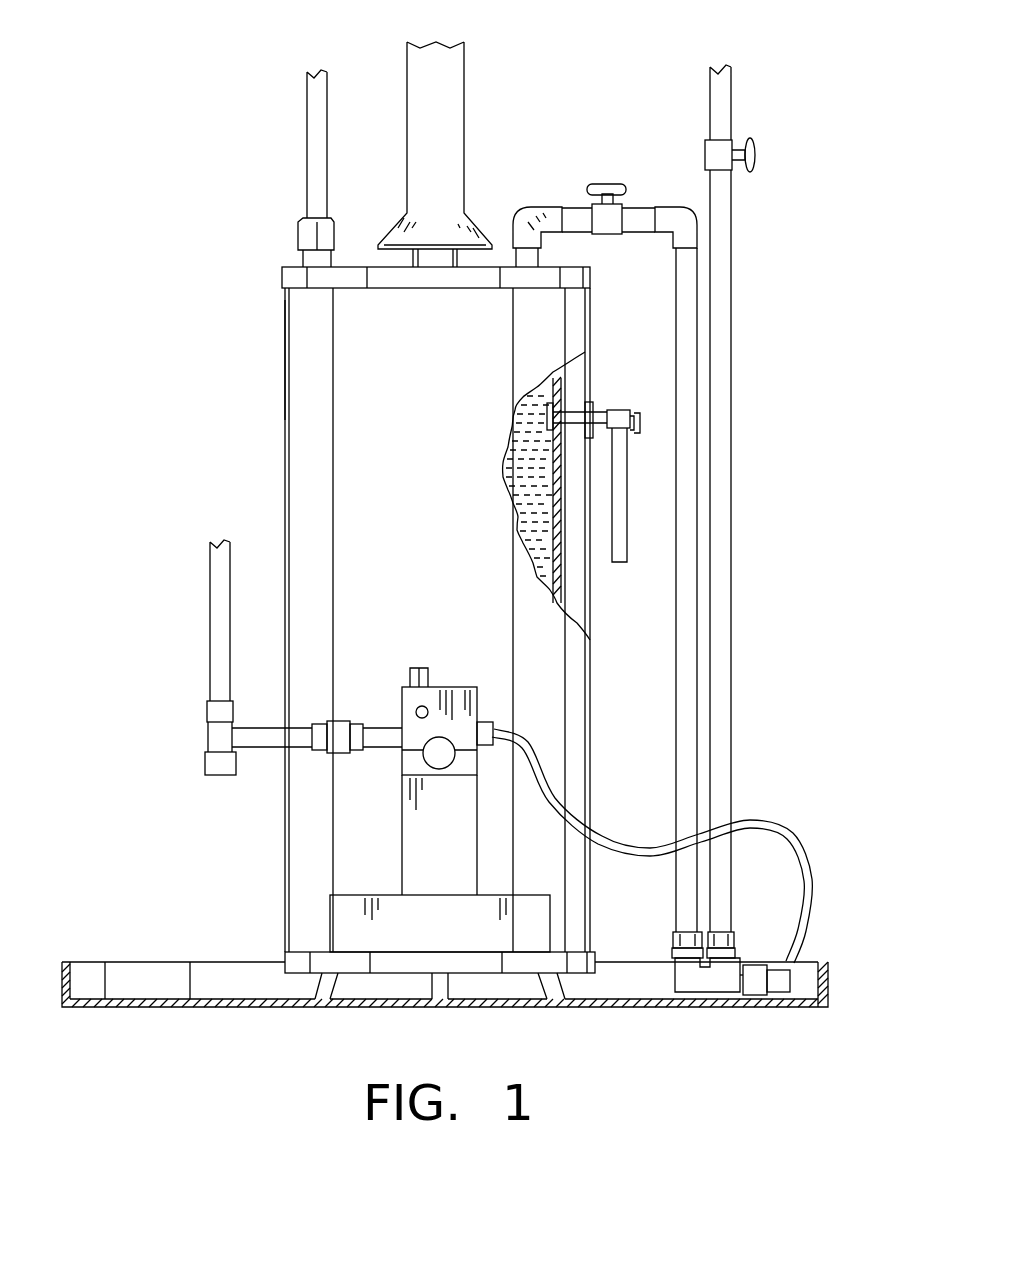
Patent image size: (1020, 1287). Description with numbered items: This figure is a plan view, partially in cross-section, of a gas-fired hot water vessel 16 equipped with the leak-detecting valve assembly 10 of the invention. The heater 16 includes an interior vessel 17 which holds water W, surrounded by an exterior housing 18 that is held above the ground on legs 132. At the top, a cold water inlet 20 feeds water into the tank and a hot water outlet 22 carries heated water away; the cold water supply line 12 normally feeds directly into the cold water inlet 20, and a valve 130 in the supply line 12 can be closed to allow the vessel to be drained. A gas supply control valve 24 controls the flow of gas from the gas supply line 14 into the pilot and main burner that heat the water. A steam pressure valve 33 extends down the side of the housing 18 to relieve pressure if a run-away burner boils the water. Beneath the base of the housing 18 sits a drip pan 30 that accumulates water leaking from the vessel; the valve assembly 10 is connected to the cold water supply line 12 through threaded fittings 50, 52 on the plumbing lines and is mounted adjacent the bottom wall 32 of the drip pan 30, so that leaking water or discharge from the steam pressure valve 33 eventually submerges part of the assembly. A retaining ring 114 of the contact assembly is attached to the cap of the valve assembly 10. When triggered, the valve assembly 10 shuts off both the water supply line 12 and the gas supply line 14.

The valve assembly 10 is at (658, 982).
The cold water supply line 12 is at (727, 742).
The gas supply line 14 is at (214, 615).
The hot water vessel 16 is at (280, 447).
The interior vessel 17 is at (555, 557).
The exterior housing 18 is at (300, 340).
The cold water inlet 20 is at (516, 258).
The hot water outlet 22 is at (312, 118).
The gas supply control valve 24 is at (385, 765).
The drip pan 30 is at (112, 950).
The bottom wall 32 is at (812, 995).
The steam pressure valve 33 is at (620, 467).
The threaded fitting 50 is at (735, 943).
The threaded fitting 52 is at (677, 943).
The retaining ring 114 is at (773, 997).
The valve 130 is at (713, 155).
The legs 132 is at (323, 987).
The water W is at (540, 386).